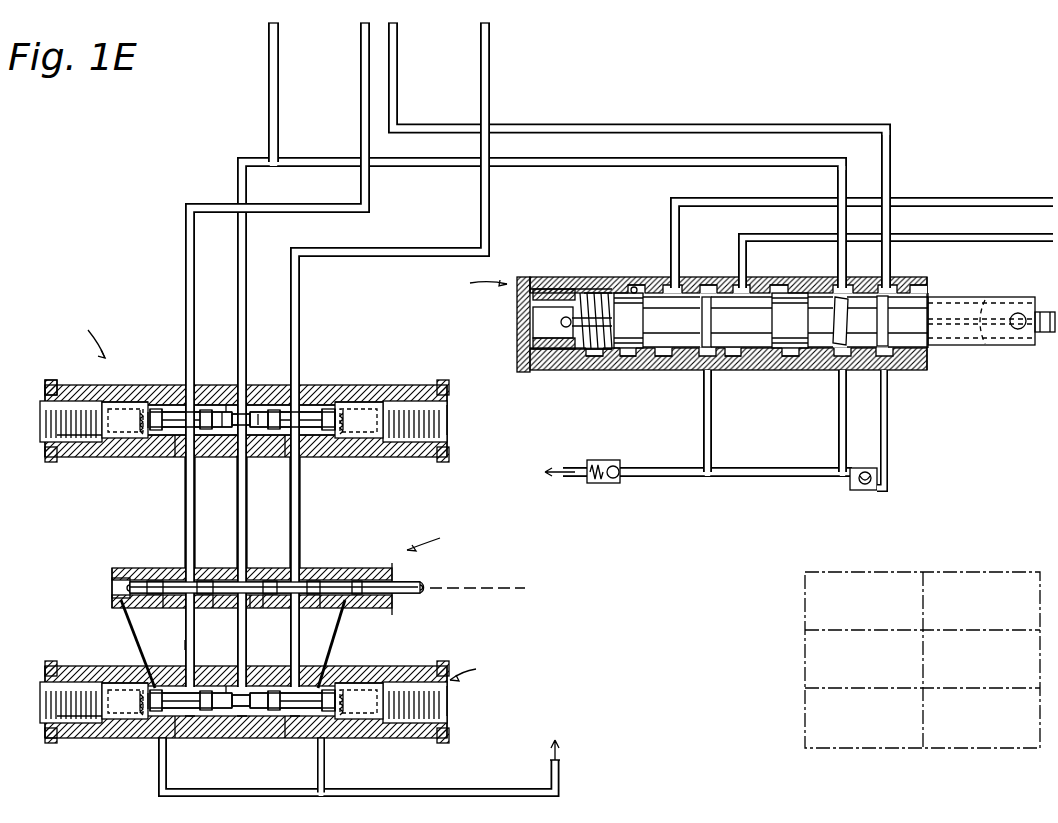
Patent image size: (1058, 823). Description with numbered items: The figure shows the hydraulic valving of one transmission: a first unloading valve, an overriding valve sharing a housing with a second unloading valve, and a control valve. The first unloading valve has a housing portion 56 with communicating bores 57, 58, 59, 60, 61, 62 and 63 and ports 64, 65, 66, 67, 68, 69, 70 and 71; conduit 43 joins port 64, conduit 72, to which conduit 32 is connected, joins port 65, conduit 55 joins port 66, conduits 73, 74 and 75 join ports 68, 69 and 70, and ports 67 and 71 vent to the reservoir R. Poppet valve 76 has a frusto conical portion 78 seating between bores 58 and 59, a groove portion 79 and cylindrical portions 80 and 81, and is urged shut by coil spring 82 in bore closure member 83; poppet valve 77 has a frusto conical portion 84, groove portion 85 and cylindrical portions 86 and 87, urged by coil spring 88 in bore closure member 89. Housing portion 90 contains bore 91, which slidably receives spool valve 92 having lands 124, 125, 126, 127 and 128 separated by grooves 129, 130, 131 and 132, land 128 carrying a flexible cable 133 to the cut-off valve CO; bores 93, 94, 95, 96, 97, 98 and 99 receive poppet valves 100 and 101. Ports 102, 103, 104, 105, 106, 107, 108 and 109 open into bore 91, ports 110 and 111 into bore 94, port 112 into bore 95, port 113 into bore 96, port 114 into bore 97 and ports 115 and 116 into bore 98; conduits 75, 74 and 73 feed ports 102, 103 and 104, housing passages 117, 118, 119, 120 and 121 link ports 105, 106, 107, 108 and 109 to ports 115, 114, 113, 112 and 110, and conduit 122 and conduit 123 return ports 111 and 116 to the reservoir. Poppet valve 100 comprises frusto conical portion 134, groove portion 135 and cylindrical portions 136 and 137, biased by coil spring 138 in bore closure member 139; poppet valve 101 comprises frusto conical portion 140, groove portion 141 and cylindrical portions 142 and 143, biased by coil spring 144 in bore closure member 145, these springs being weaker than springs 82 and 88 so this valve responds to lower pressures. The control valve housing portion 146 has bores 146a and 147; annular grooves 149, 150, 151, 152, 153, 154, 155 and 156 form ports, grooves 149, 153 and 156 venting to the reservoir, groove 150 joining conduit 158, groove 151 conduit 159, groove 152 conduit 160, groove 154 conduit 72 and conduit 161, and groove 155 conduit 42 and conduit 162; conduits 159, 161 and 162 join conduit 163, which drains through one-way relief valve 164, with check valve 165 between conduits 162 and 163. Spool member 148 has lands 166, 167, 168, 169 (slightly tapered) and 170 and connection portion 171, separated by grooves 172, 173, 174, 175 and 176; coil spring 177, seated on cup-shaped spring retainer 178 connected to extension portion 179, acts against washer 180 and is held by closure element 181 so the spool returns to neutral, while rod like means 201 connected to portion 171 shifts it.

The conduit 32 is at (268, 39).
The conduit 43 is at (360, 39).
The conduit 42 is at (398, 39).
The conduit 55 is at (490, 39).
The conduit 72 is at (237, 283).
The conduit 73 is at (300, 507).
The conduit 74 is at (247, 509).
The conduit 75 is at (185, 509).
The housing portion 56 is at (47, 385).
The bore 57 is at (90, 400).
The bore 58 is at (132, 402).
The bore 59 is at (200, 402).
The bore 60 is at (255, 405).
The bore 61 is at (308, 402).
The bore 62 is at (352, 402).
The bore 63 is at (405, 400).
The port 64 is at (180, 402).
The port 65 is at (232, 405).
The port 66 is at (285, 402).
The port 67 is at (338, 445).
The port 68 is at (292, 450).
The port 69 is at (240, 438).
The port 70 is at (190, 450).
The port 71 is at (140, 445).
The poppet valve 76 is at (160, 382).
The poppet valve 77 is at (335, 382).
The frusto conical portion 78 is at (165, 432).
The groove portion 79 is at (210, 432).
The cylindrical portion 80 is at (222, 430).
The cylindrical portion 81 is at (224, 412).
The coil spring 82 is at (125, 420).
The bore closure member 83 is at (78, 452).
The frusto conical portion 84 is at (326, 432).
The groove portion 85 is at (278, 432).
The cylindrical portion 86 is at (270, 432).
The cylindrical portion 87 is at (260, 412).
The coil spring 88 is at (359, 420).
The bore closure member 89 is at (447, 427).
The housing portion 90 is at (115, 578).
The first uniformly diametered bore 91 is at (128, 572).
The spool valve 92 is at (422, 581).
The bore 93 is at (86, 688).
The bore 94 is at (108, 738).
The bore 95 is at (208, 686).
The bore 96 is at (245, 720).
The bore 97 is at (290, 712).
The bore 98 is at (360, 736).
The bore 99 is at (403, 680).
The poppet valve 100 is at (200, 784).
The poppet valve 101 is at (302, 784).
The port 102 is at (185, 566).
The port 103 is at (245, 566).
The port 104 is at (300, 566).
The port 105 is at (335, 598).
The port 106 is at (300, 598).
The port 107 is at (252, 598).
The port 108 is at (185, 605).
The port 109 is at (118, 598).
The port 110 is at (145, 680).
The port 111 is at (150, 738).
The port 112 is at (176, 686).
The port 113 is at (240, 690).
The port 114 is at (283, 690).
The port 115 is at (315, 690).
The port 116 is at (325, 738).
The housing passage 117 is at (334, 630).
The housing passage 118 is at (296, 640).
The housing passage 119 is at (237, 640).
The housing passage 120 is at (185, 644).
The housing passage 121 is at (128, 624).
The conduit 122 is at (158, 790).
The conduit 123 is at (325, 790).
The land 124 is at (150, 578).
The land 125 is at (212, 578).
The land 126 is at (263, 578).
The land 127 is at (315, 578).
The land 128 is at (378, 575).
The groove 129 is at (170, 600).
The groove 130 is at (225, 598).
The groove 131 is at (262, 598).
The groove 132 is at (350, 580).
The flexible cable 133 is at (487, 590).
The frusto conical portion 134 is at (164, 718).
The groove portion 135 is at (200, 722).
The cylindrical portion 136 is at (228, 712).
The cylindrical portion 137 is at (240, 745).
The coil spring 138 is at (125, 701).
The bore closure member 139 is at (55, 738).
The frusto conical portion 140 is at (330, 690).
The groove portion 141 is at (280, 722).
The cylindrical portion 142 is at (268, 712).
The cylindrical portion 143 is at (260, 693).
The coil spring 144 is at (359, 701).
The bore closure member 145 is at (447, 716).
The housing portion 146 is at (517, 355).
The bore 146a is at (628, 291).
The bore 147 is at (552, 292).
The spool member 148 is at (975, 292).
The annular groove 149 is at (640, 286).
The annular groove 150 is at (665, 360).
The annular groove 151 is at (708, 286).
The annular groove 152 is at (735, 360).
The annular groove 153 is at (778, 286).
The annular groove 154 is at (795, 360).
The annular groove 155 is at (908, 286).
The annular groove 156 is at (930, 285).
The conduit 158 is at (668, 205).
The conduit 159 is at (703, 431).
The conduit 160 is at (766, 232).
The conduit 161 is at (838, 429).
The conduit 162 is at (890, 414).
The conduit 163 is at (752, 470).
The one-way relief valve 164 is at (608, 487).
The check valve 165 is at (846, 484).
The land 166 is at (642, 327).
The land 167 is at (702, 304).
The land 168 is at (801, 320).
The land 169 is at (840, 300).
The land 170 is at (882, 298).
The extending connection portion 171 is at (974, 326).
The groove 172 is at (684, 327).
The groove 173 is at (748, 327).
The groove 174 is at (823, 322).
The groove 175 is at (862, 322).
The groove 176 is at (908, 322).
The coil spring 177 is at (590, 296).
The cup-shaped spring retainer 178 is at (535, 278).
The extension portion 179 is at (588, 358).
The washer 180 is at (622, 358).
The closure element 181 is at (517, 312).
The rod like means 201 is at (1043, 345).